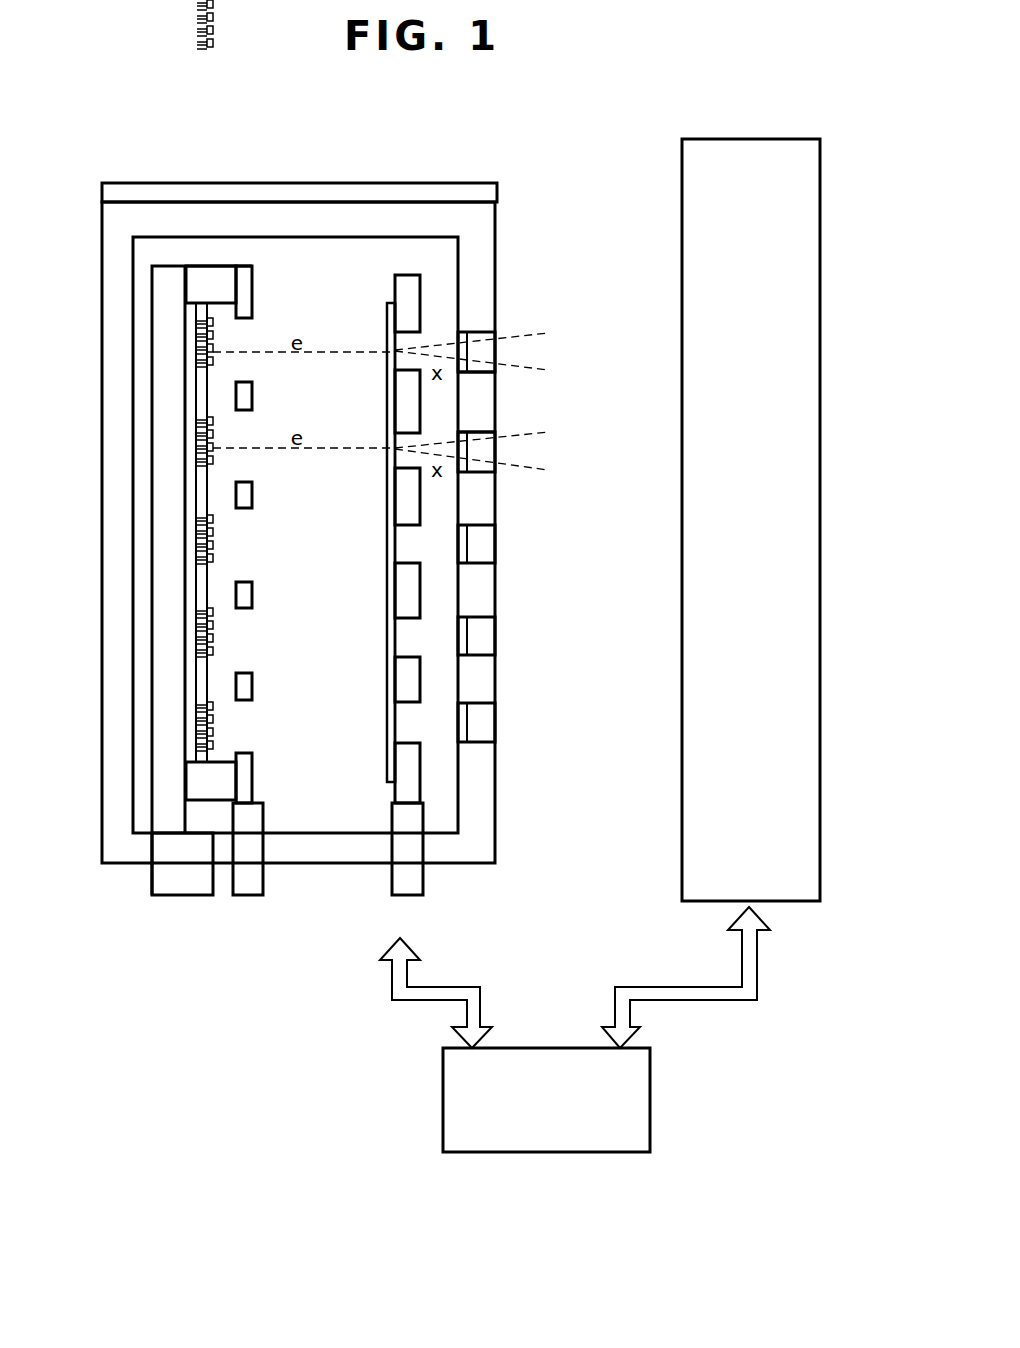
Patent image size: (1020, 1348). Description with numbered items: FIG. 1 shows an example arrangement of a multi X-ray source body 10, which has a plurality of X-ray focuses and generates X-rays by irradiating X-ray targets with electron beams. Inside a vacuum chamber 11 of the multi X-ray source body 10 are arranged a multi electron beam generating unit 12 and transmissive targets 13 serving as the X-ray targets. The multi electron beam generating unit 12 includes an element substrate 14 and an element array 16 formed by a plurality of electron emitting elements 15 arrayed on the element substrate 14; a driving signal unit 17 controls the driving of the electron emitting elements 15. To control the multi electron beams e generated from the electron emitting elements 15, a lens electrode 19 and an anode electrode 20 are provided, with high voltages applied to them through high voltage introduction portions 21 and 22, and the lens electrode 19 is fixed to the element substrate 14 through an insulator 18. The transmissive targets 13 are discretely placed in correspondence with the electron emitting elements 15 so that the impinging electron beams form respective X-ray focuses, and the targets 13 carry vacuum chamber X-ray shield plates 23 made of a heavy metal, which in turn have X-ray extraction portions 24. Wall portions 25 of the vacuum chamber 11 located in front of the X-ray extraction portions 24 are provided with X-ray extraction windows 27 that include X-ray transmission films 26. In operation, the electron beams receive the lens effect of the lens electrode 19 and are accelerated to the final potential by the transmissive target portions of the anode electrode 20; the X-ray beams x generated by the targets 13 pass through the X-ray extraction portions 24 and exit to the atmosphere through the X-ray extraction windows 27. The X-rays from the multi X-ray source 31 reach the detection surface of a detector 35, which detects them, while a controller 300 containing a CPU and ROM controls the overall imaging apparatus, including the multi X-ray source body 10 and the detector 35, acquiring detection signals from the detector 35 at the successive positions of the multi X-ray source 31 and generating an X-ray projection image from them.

The multi X-ray source body 10 is at (102, 549).
The vacuum chamber 11 is at (332, 255).
The multi electron beam generating unit 12 is at (170, 466).
The transmissive targets 13 is at (385, 722).
The element substrate 14 is at (188, 331).
The electron emitting elements 15 is at (197, 435).
The element array 16 is at (203, 585).
The driving signal unit 17 is at (177, 885).
The insulator 18 is at (212, 290).
The lens electrode 19 is at (245, 290).
The anode electrode 20 is at (385, 778).
The high voltage introduction portion 21 is at (249, 885).
The high voltage introduction portion 22 is at (407, 876).
The vacuum chamber X-ray shield plates 23 is at (405, 290).
The X-ray extraction portions 24 is at (410, 637).
The wall portions 25 is at (478, 398).
The X-ray transmission films 26 is at (468, 345).
The X-ray extraction windows 27 is at (478, 450).
The multi X-ray source 31 is at (108, 183).
The detector 35 is at (751, 139).
The controller 300 is at (652, 1093).